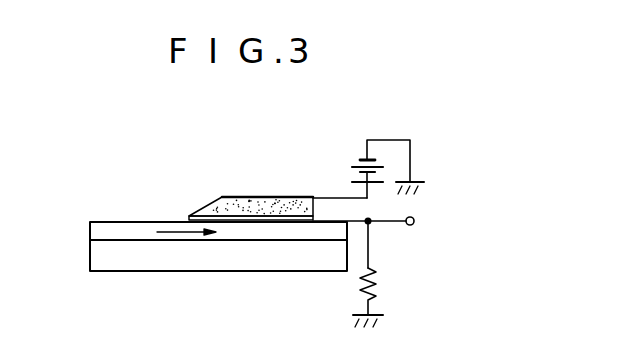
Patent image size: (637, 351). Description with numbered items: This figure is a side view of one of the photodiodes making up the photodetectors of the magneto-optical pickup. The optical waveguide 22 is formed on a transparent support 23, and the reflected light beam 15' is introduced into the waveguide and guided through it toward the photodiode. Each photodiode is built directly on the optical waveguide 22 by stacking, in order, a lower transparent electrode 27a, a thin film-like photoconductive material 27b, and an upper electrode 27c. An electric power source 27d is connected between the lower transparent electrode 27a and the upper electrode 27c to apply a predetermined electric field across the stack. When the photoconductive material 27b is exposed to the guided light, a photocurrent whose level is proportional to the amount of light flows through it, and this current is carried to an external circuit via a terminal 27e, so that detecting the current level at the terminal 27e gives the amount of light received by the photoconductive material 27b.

The optical waveguide 22 is at (112, 222).
The transparent support 23 is at (130, 253).
The reflected light beam 15' is at (186, 271).
The lower transparent electrode 27a is at (200, 208).
The thin film-like photoconductive material 27b is at (253, 195).
The upper electrode 27c is at (302, 195).
The electric power source 27d is at (358, 157).
The terminal 27e is at (415, 219).